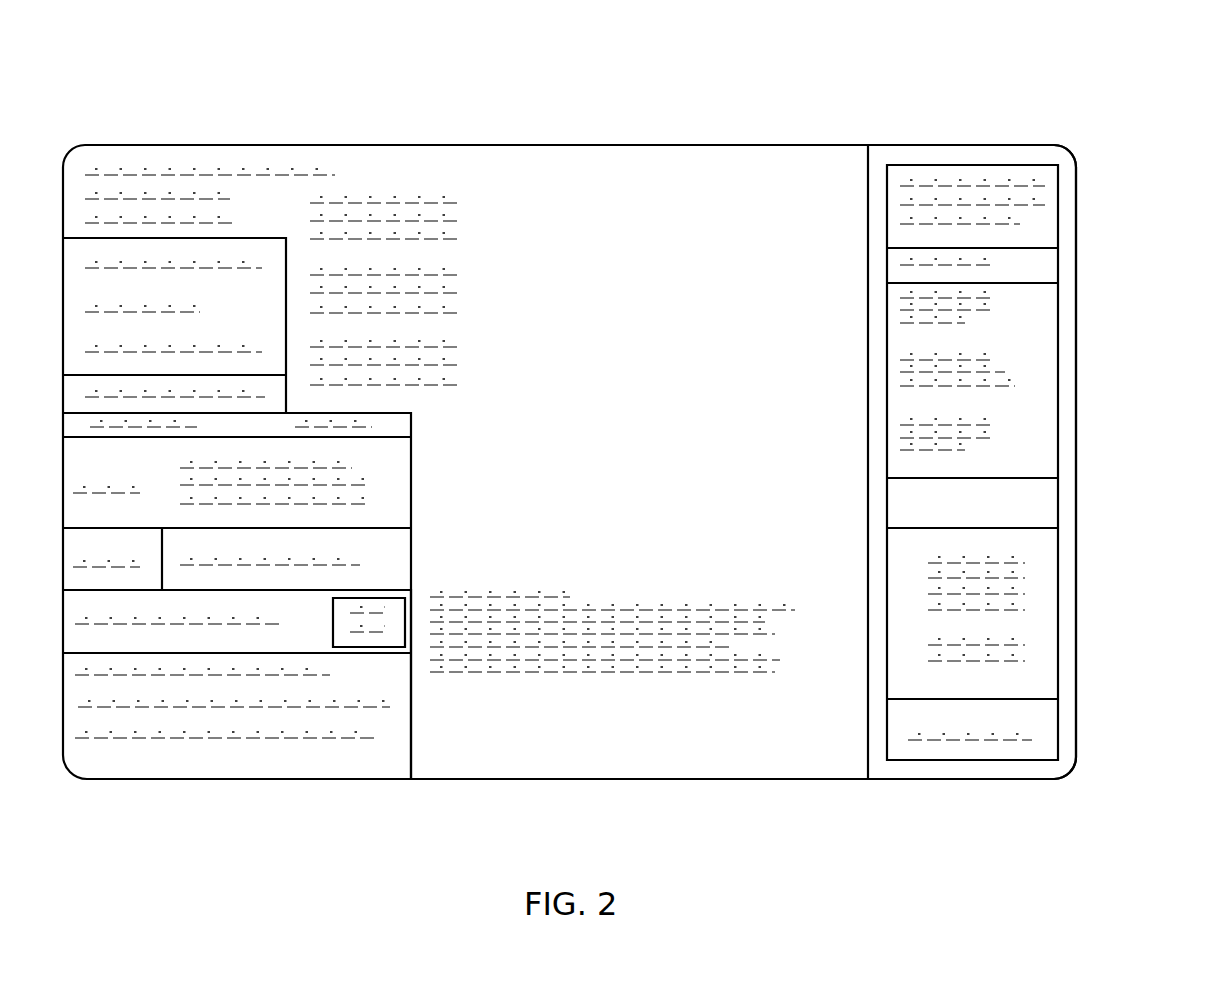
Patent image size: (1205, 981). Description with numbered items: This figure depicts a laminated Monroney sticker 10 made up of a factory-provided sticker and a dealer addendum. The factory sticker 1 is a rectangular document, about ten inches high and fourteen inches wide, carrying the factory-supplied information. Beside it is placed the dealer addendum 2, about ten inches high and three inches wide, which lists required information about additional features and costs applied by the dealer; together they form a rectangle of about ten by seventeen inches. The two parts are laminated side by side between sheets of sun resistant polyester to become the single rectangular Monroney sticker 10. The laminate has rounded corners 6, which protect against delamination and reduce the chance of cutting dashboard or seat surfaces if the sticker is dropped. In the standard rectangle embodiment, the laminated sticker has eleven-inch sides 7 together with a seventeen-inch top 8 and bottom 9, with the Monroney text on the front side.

The Monroney sticker 10 is at (213, 72).
The top 8 is at (492, 145).
The factory sticker 1 is at (812, 188).
The dealer addendum 2 is at (997, 177).
The rounded corners 6 is at (1072, 155).
The sides 7 is at (1077, 450).
The bottom 9 is at (440, 779).